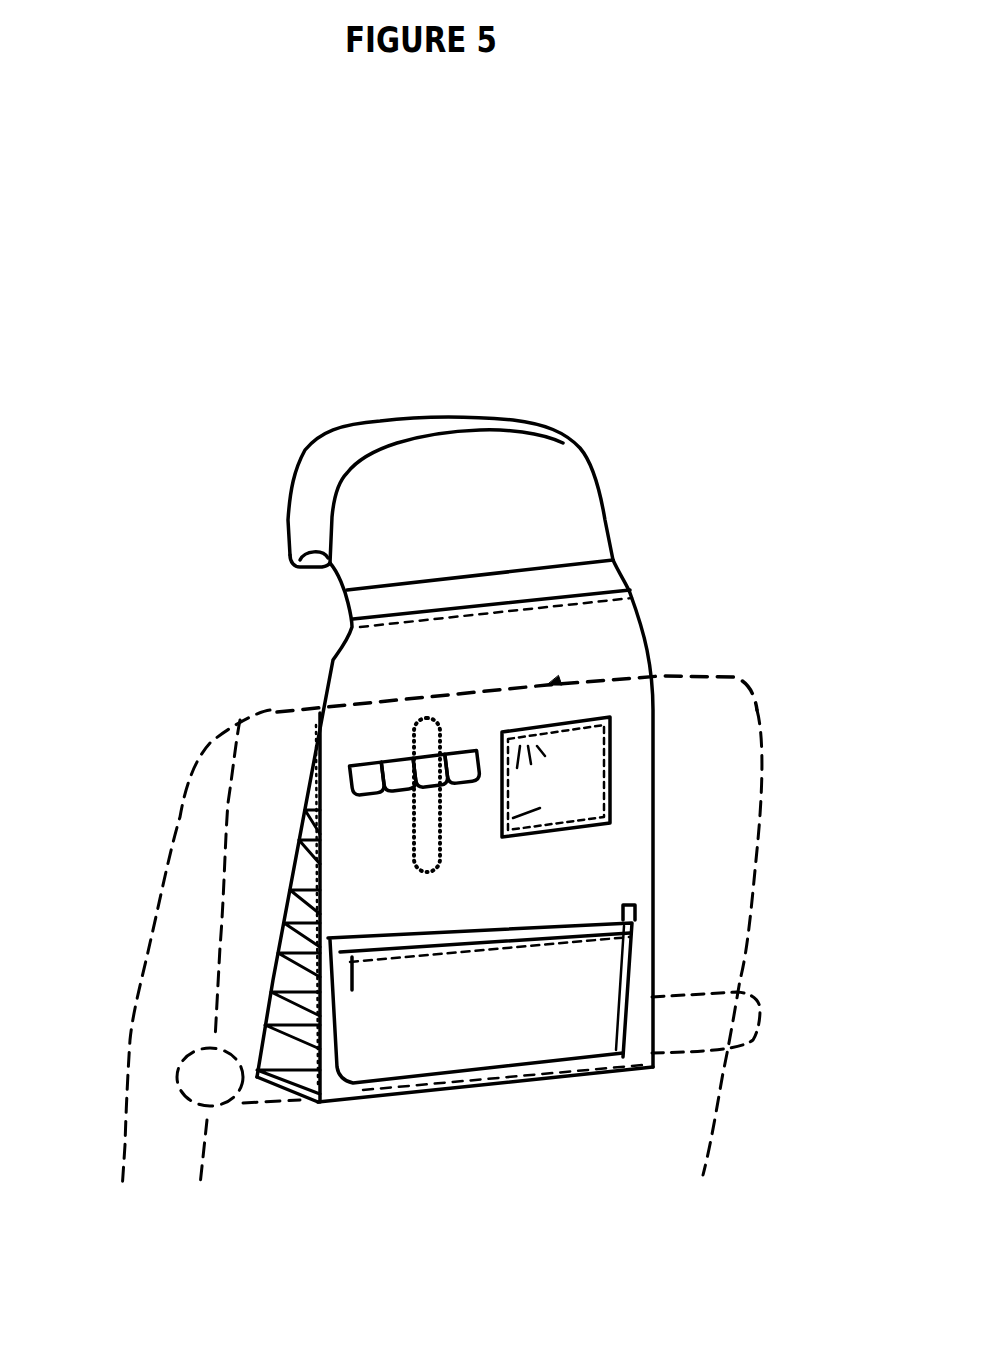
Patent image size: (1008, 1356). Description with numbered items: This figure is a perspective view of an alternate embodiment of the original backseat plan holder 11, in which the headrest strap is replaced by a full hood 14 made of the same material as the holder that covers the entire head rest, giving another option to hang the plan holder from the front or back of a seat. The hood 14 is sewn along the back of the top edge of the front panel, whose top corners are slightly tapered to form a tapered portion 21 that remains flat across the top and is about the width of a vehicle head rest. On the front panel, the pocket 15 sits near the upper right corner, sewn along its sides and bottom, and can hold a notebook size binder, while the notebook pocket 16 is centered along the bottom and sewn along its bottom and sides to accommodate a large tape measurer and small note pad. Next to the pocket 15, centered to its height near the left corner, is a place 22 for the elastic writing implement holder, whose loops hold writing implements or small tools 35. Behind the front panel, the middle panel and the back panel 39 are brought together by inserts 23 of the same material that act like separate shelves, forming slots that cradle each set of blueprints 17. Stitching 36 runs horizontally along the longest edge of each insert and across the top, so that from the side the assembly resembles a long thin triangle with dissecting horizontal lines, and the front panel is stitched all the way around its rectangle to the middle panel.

The original backseat plan holder 11 is at (632, 873).
The hood 14 is at (507, 515).
The pocket 15 is at (598, 740).
The notebook pocket 16 is at (507, 1003).
The blueprints 17 is at (720, 1023).
The tapered portion 21 is at (415, 658).
The place for writing implements 22 is at (360, 777).
The inserts 23 is at (288, 1083).
The small tools 35 is at (437, 822).
The stitching 36 is at (547, 685).
The back panel 39 is at (263, 1028).